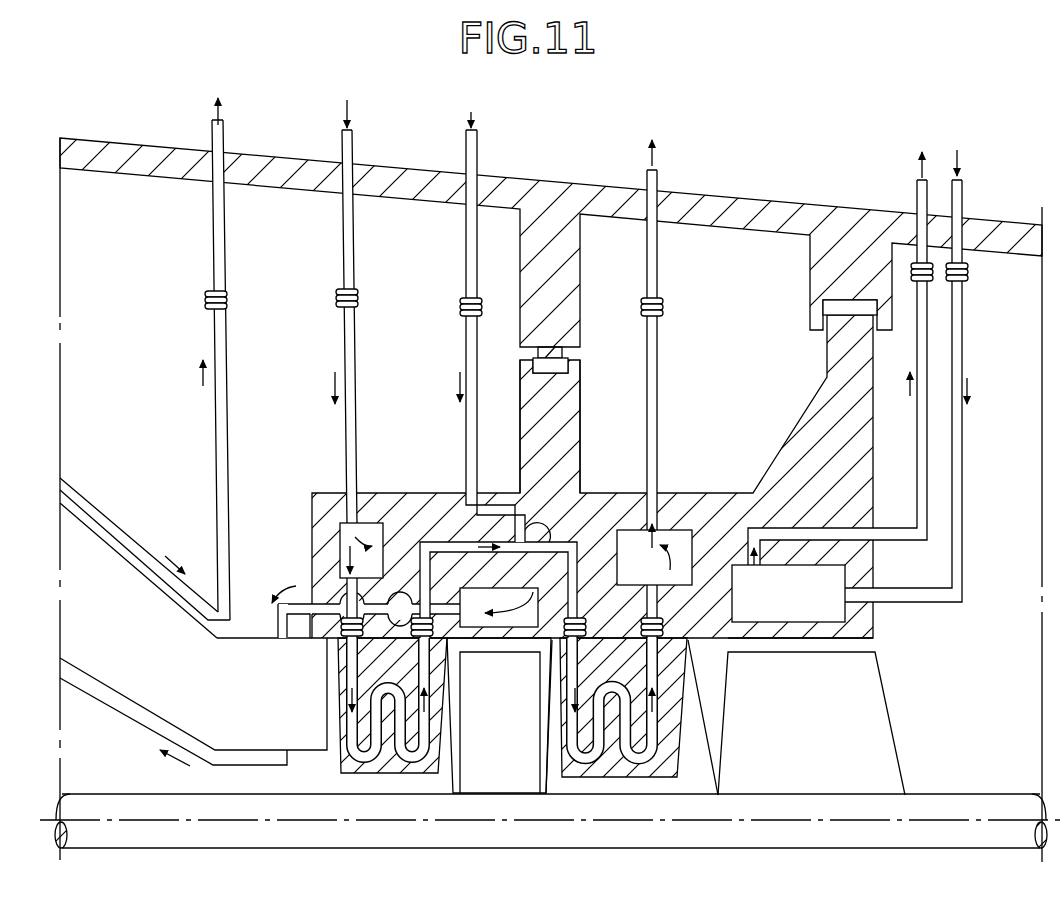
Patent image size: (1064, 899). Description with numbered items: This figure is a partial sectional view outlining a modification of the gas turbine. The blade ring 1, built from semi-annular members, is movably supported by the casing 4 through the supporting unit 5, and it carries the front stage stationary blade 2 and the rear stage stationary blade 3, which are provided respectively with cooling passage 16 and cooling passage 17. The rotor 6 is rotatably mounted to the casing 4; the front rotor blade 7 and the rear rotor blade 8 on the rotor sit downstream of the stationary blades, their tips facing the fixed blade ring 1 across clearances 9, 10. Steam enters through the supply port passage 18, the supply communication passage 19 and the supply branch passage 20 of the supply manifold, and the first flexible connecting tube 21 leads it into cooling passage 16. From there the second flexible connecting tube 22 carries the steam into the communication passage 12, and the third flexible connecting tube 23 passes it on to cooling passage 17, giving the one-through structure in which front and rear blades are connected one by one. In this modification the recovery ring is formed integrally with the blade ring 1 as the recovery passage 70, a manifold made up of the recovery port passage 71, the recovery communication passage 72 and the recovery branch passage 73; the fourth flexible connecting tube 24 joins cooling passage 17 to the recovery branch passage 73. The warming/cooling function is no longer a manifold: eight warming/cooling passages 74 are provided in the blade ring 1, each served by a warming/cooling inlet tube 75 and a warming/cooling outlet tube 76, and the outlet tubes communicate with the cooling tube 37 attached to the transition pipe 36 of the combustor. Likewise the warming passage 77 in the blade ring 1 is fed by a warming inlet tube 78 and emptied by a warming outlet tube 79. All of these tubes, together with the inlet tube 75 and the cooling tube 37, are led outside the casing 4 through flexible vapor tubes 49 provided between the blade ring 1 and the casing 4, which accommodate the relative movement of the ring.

The blade ring 1 is at (325, 490).
The front stage stationary blade 2 is at (340, 682).
The rear stage stationary blade 3 is at (677, 725).
The casing 4 is at (587, 186).
The supporting unit 5 is at (553, 347).
The rotor 6 is at (963, 807).
The front rotor blade 7 is at (470, 772).
The rear rotor blade 8 is at (880, 715).
The clearance 9 is at (502, 650).
The clearance 10 is at (863, 643).
The communication passage 12 is at (470, 500).
The cooling passage 16 is at (352, 725).
The cooling passage 17 is at (652, 738).
The supply port passage 18 is at (360, 520).
The supply communication passage 19 is at (330, 525).
The supply branch passage 20 is at (330, 555).
The first flexible connecting tube 21 is at (345, 640).
The second flexible connecting tube 22 is at (440, 650).
The third flexible connecting tube 23 is at (575, 660).
The fourth flexible connecting tube 24 is at (668, 655).
The transition pipe 36 is at (98, 550).
The cooling tube 37 is at (216, 410).
The vapor tube 49 is at (205, 300).
The recovery passage 70 is at (627, 547).
The recovery port passage 71 is at (650, 493).
The recovery communication passage 72 is at (678, 540).
The recovery branch passage 73 is at (662, 632).
The warming/cooling passage 74 is at (473, 598).
The warming/cooling inlet tube 75 is at (470, 422).
The warming/cooling outlet tube 76 is at (323, 607).
The warming passage 77 is at (830, 582).
The warming inlet tube 78 is at (957, 430).
The warming outlet tube 79 is at (930, 477).